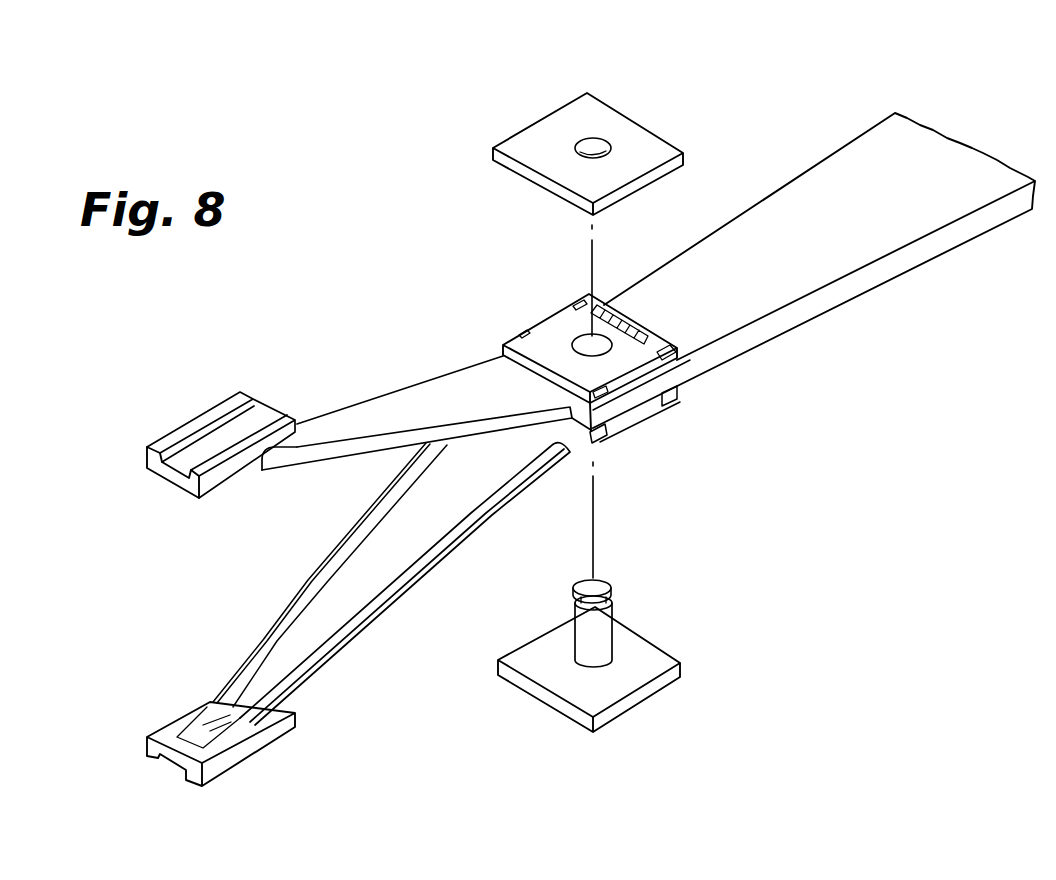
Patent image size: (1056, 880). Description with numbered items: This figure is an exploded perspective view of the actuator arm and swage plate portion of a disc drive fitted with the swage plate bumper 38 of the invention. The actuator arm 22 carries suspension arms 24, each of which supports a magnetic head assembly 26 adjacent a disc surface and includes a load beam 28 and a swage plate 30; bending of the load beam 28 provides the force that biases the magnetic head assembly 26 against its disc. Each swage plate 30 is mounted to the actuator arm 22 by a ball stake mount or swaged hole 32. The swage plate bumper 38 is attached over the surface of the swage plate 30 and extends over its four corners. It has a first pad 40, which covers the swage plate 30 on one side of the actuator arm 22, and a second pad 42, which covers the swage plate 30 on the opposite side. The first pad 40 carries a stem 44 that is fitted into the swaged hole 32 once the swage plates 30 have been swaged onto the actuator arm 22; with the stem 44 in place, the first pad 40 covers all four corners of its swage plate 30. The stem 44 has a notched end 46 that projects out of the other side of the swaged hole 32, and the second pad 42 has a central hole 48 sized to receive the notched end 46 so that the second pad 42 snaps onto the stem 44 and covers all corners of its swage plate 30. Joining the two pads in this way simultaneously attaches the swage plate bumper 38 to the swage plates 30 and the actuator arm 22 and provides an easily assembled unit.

The actuator arm 22 is at (852, 180).
The suspension arm 24 is at (402, 513).
The magnetic head assembly 26 is at (184, 492).
The load beam 28 is at (447, 398).
The swage plate 30 is at (637, 357).
The swaged hole 32 is at (623, 325).
The swage plate bumper 38 is at (618, 125).
The first pad 40 is at (657, 642).
The second pad 42 is at (650, 137).
The stem 44 is at (595, 625).
The notched end 46 is at (596, 586).
The central hole 48 is at (585, 139).